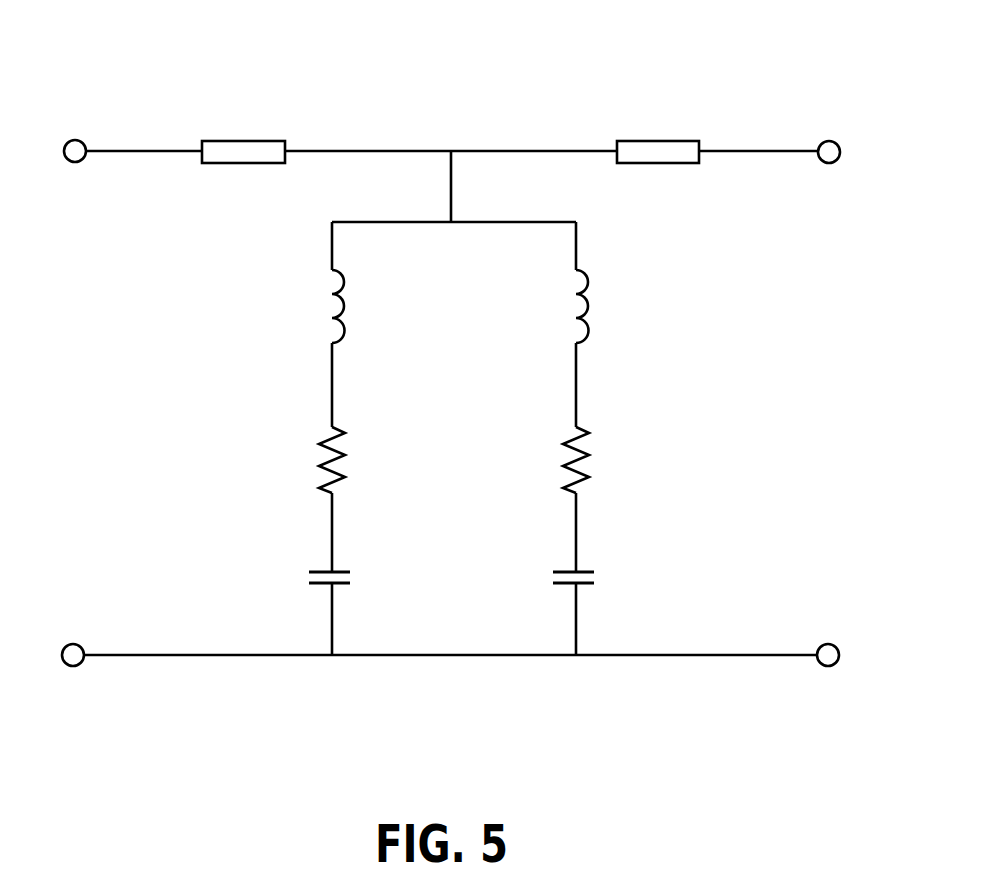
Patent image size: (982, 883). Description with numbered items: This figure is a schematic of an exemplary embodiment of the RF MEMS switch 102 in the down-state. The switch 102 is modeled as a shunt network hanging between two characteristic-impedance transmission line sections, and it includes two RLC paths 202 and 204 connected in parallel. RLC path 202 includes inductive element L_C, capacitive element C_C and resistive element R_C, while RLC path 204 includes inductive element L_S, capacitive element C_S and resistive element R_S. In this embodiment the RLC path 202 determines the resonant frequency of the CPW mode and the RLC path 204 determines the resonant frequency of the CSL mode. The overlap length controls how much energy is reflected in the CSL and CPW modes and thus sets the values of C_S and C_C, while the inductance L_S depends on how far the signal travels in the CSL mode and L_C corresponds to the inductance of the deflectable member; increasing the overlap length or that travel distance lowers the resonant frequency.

The switch 102 is at (740, 95).
The RLC path 202 is at (653, 418).
The RLC path 204 is at (288, 457).